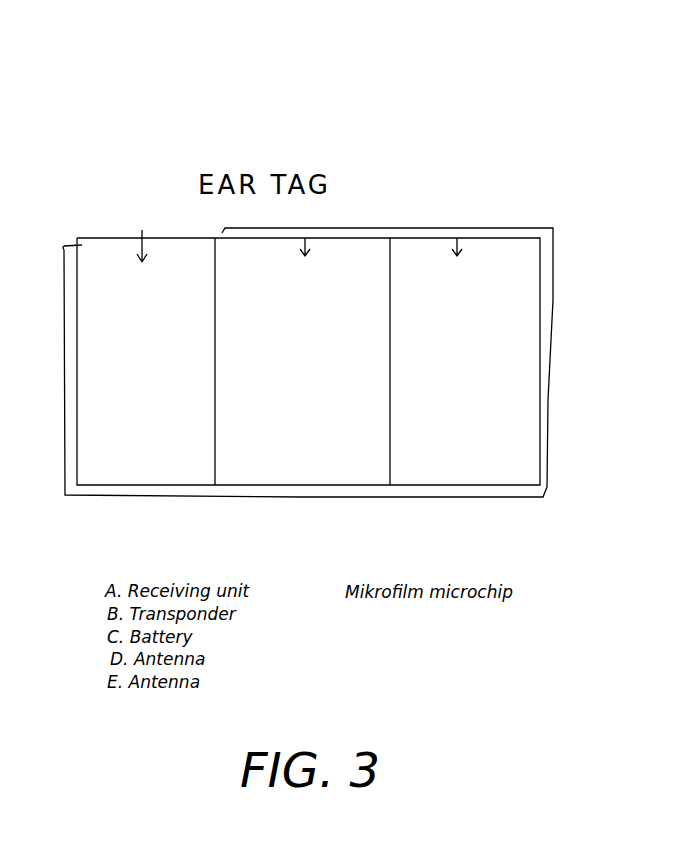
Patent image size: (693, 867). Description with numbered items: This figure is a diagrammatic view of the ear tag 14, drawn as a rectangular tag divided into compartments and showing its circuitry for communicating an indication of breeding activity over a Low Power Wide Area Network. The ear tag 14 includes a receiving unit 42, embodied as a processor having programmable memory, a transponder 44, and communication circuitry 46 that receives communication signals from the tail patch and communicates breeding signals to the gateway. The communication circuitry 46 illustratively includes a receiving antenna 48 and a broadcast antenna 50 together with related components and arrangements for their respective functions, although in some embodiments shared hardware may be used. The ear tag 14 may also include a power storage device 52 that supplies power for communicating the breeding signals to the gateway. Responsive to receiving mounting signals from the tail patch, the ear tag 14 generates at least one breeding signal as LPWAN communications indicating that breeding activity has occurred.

The ear tag 14 is at (415, 195).
The receiving unit 42 is at (110, 232).
The transponder 44 is at (252, 267).
The communication circuitry 46 is at (560, 248).
The receiving antenna 48 is at (545, 440).
The broadcast antenna 50 is at (130, 500).
The power storage device 52 is at (500, 397).